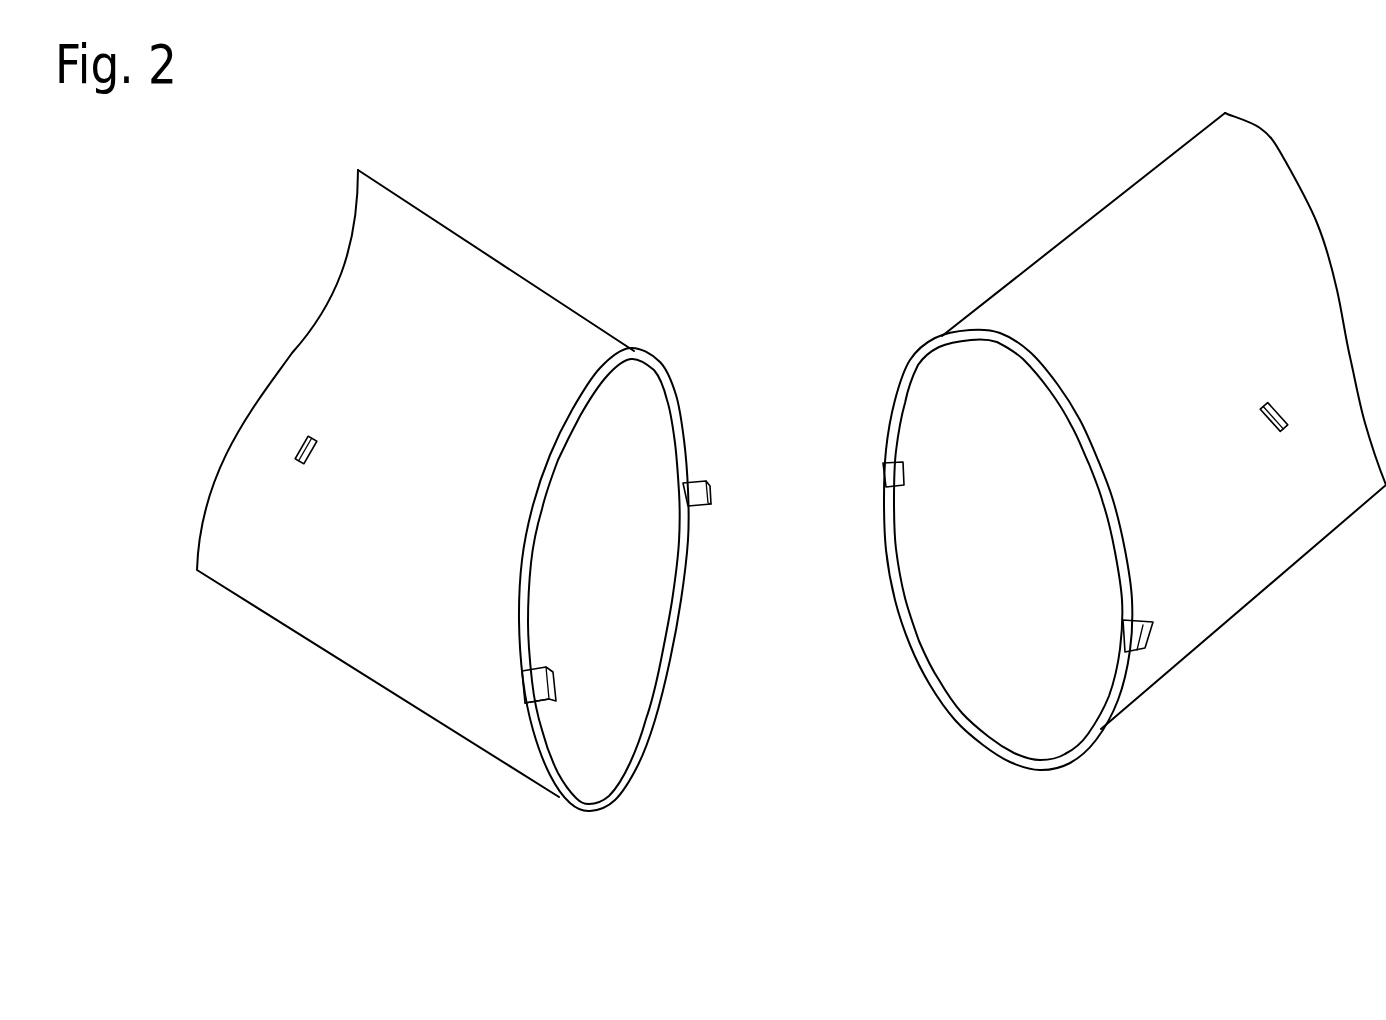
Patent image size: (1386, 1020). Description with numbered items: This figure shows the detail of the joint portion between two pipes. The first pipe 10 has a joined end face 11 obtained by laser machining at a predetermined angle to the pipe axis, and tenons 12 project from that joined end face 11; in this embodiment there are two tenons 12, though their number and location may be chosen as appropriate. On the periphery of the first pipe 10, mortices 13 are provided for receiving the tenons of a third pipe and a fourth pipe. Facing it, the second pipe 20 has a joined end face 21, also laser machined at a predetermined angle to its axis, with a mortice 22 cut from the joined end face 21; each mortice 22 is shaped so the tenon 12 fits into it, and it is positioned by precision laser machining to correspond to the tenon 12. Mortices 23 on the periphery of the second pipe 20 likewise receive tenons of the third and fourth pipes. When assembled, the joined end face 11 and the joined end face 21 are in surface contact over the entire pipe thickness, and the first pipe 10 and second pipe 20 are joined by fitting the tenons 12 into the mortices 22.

The first pipe 10 is at (468, 258).
The joined end face 11 is at (617, 785).
The tenon 12 is at (700, 487).
The mortice 13 is at (297, 462).
The second pipe 20 is at (1115, 222).
The joined end face 21 is at (970, 738).
The mortice 22 is at (883, 473).
The mortice 23 is at (1280, 430).